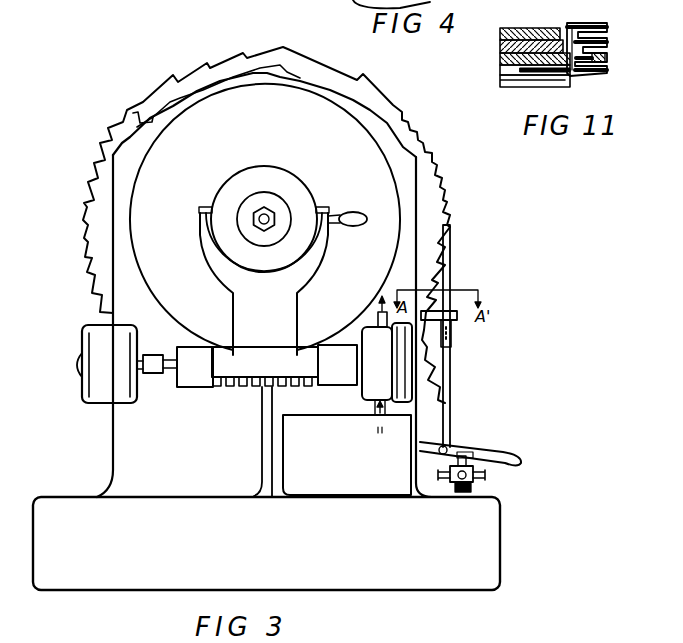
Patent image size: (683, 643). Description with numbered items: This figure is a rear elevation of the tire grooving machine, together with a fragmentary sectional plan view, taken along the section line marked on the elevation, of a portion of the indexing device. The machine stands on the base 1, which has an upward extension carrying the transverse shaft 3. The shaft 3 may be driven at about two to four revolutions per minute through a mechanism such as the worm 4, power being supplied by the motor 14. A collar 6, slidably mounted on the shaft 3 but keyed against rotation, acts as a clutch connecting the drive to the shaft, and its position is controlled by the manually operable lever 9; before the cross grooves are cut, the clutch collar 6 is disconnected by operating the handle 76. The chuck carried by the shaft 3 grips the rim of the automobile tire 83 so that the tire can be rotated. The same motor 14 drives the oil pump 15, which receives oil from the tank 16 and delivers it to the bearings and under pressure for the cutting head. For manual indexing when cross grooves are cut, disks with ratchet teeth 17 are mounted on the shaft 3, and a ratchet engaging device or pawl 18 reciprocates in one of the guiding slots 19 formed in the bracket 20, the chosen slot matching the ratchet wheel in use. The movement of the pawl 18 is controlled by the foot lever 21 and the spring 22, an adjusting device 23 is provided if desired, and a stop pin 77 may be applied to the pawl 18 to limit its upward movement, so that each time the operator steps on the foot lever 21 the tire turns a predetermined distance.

In FIG. 3, the base 1 is at (365, 578).
In FIG. 3, the transverse shaft 3 is at (252, 197).
In FIG. 3, the worm 4 is at (243, 382).
In FIG. 3, the collar 6 is at (293, 191).
In FIG. 3, the manually operable lever 9 is at (283, 315).
In FIG. 3, the motor 14 is at (100, 402).
In FIG. 3, the oil pump 15 is at (363, 393).
In FIG. 3, the tank 16 is at (347, 455).
In FIG. 3, the ratchet teeth 17 is at (397, 107).
In FIG. 3, the ratchet engaging device 18 is at (453, 247).
In FIG. 11, the ratchet engaging device 18 is at (606, 58).
In FIG. 11, the guiding slots 19 is at (603, 35).
In FIG. 3, the bracket 20 is at (455, 319).
In FIG. 11, the bracket 20 is at (583, 72).
In FIG. 3, the foot lever 21 is at (502, 455).
In FIG. 3, the spring 22 is at (440, 375).
In FIG. 3, the adjusting device 23 is at (478, 485).
In FIG. 3, the handle 76 is at (374, 194).
In FIG. 3, the stop pin 77 is at (449, 350).
In FIG. 3, the automobile tire 83 is at (205, 164).